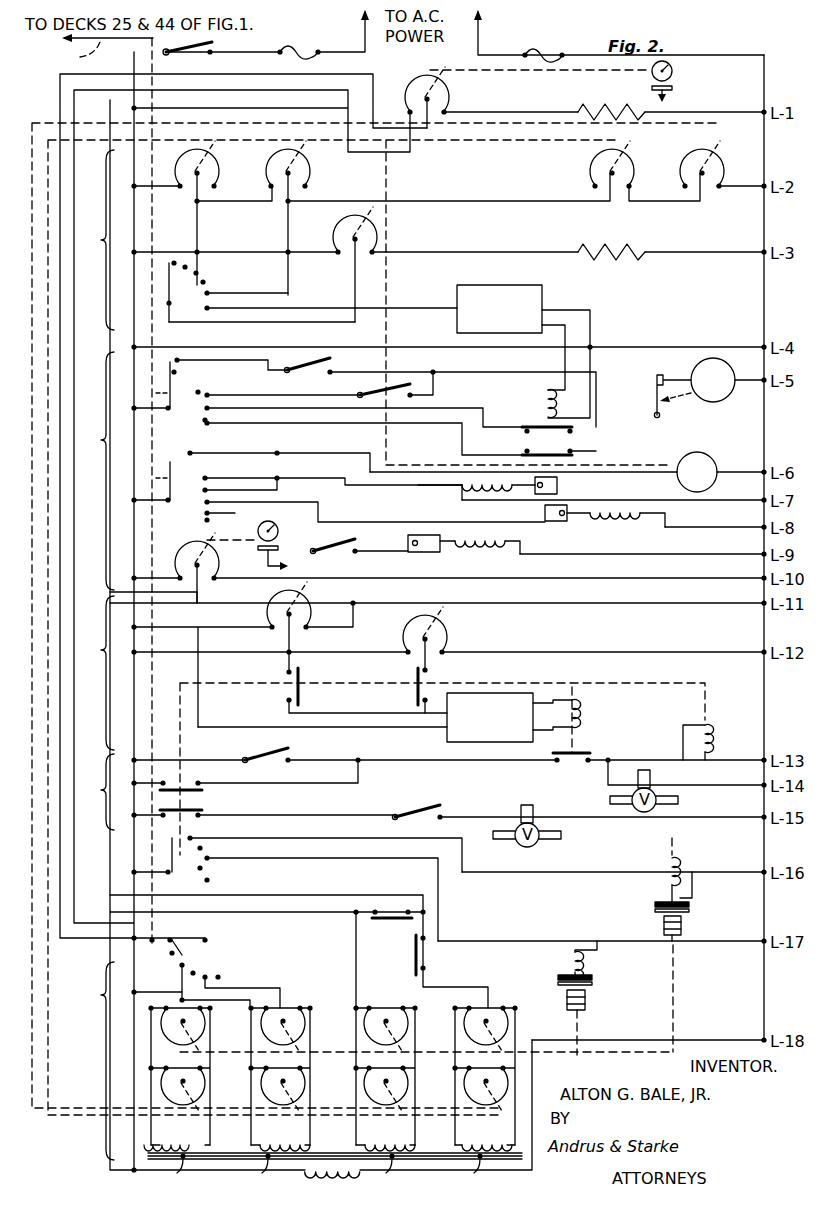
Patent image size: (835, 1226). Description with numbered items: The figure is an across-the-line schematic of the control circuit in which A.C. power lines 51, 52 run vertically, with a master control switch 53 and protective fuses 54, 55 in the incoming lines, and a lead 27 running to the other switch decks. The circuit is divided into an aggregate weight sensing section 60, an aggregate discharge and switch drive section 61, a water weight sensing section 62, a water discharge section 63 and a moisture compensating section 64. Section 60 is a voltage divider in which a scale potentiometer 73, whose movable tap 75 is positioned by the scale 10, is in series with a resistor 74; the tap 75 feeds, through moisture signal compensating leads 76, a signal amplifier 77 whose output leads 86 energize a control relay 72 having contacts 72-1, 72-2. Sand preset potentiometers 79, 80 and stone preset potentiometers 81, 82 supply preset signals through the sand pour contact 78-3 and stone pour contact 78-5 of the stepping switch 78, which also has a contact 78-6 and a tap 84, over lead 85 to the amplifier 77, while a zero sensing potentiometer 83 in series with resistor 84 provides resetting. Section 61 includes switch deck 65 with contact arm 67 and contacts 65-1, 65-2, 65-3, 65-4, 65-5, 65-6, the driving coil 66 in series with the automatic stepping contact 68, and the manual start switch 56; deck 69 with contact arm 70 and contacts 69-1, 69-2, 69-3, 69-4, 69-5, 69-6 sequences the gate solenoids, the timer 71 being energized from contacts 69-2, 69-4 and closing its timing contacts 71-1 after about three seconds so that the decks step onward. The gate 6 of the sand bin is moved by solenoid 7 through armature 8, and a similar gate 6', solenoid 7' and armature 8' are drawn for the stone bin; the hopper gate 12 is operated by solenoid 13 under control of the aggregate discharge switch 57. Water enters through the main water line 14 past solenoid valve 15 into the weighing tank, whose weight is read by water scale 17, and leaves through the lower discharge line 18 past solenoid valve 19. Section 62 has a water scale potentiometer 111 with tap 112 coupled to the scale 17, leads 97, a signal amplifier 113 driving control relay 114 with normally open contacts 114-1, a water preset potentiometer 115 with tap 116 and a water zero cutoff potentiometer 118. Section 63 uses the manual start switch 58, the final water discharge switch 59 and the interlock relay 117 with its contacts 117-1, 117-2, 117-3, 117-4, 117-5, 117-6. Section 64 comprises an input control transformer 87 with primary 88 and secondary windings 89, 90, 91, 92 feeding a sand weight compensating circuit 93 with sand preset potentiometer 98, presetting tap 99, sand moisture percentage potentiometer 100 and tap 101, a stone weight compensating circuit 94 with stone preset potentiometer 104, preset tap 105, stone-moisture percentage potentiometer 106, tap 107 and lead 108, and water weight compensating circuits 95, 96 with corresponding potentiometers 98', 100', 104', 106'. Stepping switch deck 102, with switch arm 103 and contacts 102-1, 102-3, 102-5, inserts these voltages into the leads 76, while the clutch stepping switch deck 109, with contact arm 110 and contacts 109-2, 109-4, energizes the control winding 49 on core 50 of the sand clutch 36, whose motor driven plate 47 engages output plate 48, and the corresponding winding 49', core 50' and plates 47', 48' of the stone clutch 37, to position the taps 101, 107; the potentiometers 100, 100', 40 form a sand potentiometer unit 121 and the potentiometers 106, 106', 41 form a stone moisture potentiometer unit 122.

The valve solenoid 6 is at (547, 484).
The valve solenoid 6' is at (537, 510).
The solenoid coil 7 is at (482, 501).
The solenoid coil 7' is at (603, 531).
The lead 8 is at (440, 484).
The lead 8' is at (661, 514).
The gauge to hopper 10 is at (648, 77).
The valve 12 is at (418, 552).
The solenoid coil 13 is at (479, 545).
The valve 14 is at (678, 800).
The valve actuator 15 is at (622, 800).
The gauge to tank 17 is at (280, 521).
The valve 18 is at (562, 834).
The valve actuator 19 is at (517, 820).
The connection to decks 27 is at (80, 54).
The probe assembly 36 is at (696, 905).
The probe assembly 37 is at (596, 976).
The probe plate 40 is at (690, 913).
The probe plate 41 is at (567, 986).
The probe contact 47 is at (629, 894).
The probe contact 47' is at (538, 968).
The probe plate 48 is at (634, 910).
The probe plate 48' is at (621, 980).
The probe electrode 49 is at (692, 873).
The probe electrode 49' is at (589, 947).
The probe lead 50 is at (651, 882).
The probe lead 50' is at (552, 953).
The power lead 51 is at (365, 36).
The power lead 52 is at (478, 37).
The main switch 53 is at (196, 55).
The fuse 54 is at (298, 48).
The fuse 55 is at (540, 47).
The switch 56 is at (336, 360).
The switch 57 is at (366, 540).
The switch 58 is at (300, 750).
The switch 59 is at (435, 804).
The circuit group 60 is at (98, 240).
The circuit group 61 is at (98, 471).
The circuit group 62 is at (98, 673).
The circuit group 63 is at (98, 792).
The circuit group 64 is at (98, 1061).
The selector switch 65 is at (166, 376).
The switch contact 65-1 is at (168, 360).
The switch contact 65-2 is at (196, 369).
The switch contact 65-3 is at (340, 417).
The switch contact 65-4 is at (185, 433).
The switch contact 65-5 is at (214, 406).
The switch contact 65-6 is at (216, 424).
The CRS unit 66 is at (721, 400).
The switch arm 67 is at (152, 393).
The photocell 68 is at (657, 374).
The selector switch 69 is at (162, 504).
The switch contact 69-1 is at (164, 472).
The switch contact 69-2 is at (280, 453).
The switch contact 69-3 is at (332, 470).
The switch contact 69-4 is at (240, 476).
The switch contact 69-5 is at (226, 521).
The switch contact 69-6 is at (351, 518).
The switch arm 70 is at (153, 474).
The timer 71 is at (677, 483).
The timer switch 71-1 is at (420, 398).
The relay coil 72 is at (544, 404).
The relay contact 72-1 is at (596, 451).
The relay contact 72-2 is at (524, 451).
The relay 73 is at (449, 95).
The resistor 74 is at (592, 104).
The relay blade 75 is at (412, 92).
The lead 76 is at (382, 155).
The signal amplifier 77 is at (514, 286).
The selector switch 78 is at (183, 300).
The switch contact 78-3 is at (196, 266).
The switch contact 78-5 is at (204, 281).
The switch contact 78-6 is at (212, 292).
The relay 79 is at (220, 165).
The relay 80 is at (682, 167).
The relay 81 is at (312, 168).
The relay 82 is at (594, 170).
The relay 83 is at (375, 218).
The resistor 84 is at (172, 262).
The lead 85 is at (380, 322).
The lead 86 is at (590, 310).
The common bus 87 is at (138, 1156).
The coil 88 is at (312, 1173).
The coil 89 is at (204, 1140).
The coil 90 is at (304, 1140).
The coil 91 is at (409, 1140).
The coil 92 is at (466, 1145).
The connection 93 is at (184, 1173).
The connection 94 is at (264, 1173).
The connection 95 is at (392, 1175).
The connection 96 is at (478, 1171).
The leads 97 is at (200, 600).
The relay contact 98 is at (221, 1098).
The relay contact 98' is at (430, 1098).
The relay contact 99 is at (192, 1085).
The relay contact 100 is at (450, 992).
The relay contact 100' is at (543, 977).
The relay contact 101 is at (190, 1034).
The selector switch 102 is at (180, 964).
The switch contact 102-1 is at (208, 942).
The switch contact 102-3 is at (204, 966).
The switch contact 102-5 is at (222, 978).
The switch blade 103 is at (208, 936).
The relay contact 104 is at (327, 1098).
The relay contact 104' is at (408, 1058).
The relay contact 105 is at (292, 1085).
The relay contact 106 is at (470, 1014).
The relay contact 106' is at (539, 1012).
The relay contact 107 is at (282, 1022).
The relay contact 108 is at (208, 1008).
The selector switch 109 is at (210, 878).
The switch contact 109-2 is at (204, 837).
The switch contact 109-4 is at (210, 857).
The switch arm 110 is at (171, 874).
The relay 111 is at (178, 559).
The relay contact 112 is at (216, 559).
The signal amplifier 113 is at (510, 693).
The relay coil 114 is at (582, 714).
The relay contact 114-1 is at (584, 766).
The relay 115 is at (300, 597).
The relay contact 116 is at (305, 614).
The relay coil 117 is at (714, 728).
The relay contact 117-1 is at (196, 786).
The relay contact 117-2 is at (288, 678).
The relay contact 117-3 is at (429, 670).
The relay contact 117-4 is at (200, 822).
The relay contact 117-5 is at (427, 965).
The relay contact 117-6 is at (382, 912).
The relay 118 is at (446, 622).
The lead 121 is at (678, 938).
The lead 122 is at (583, 1012).